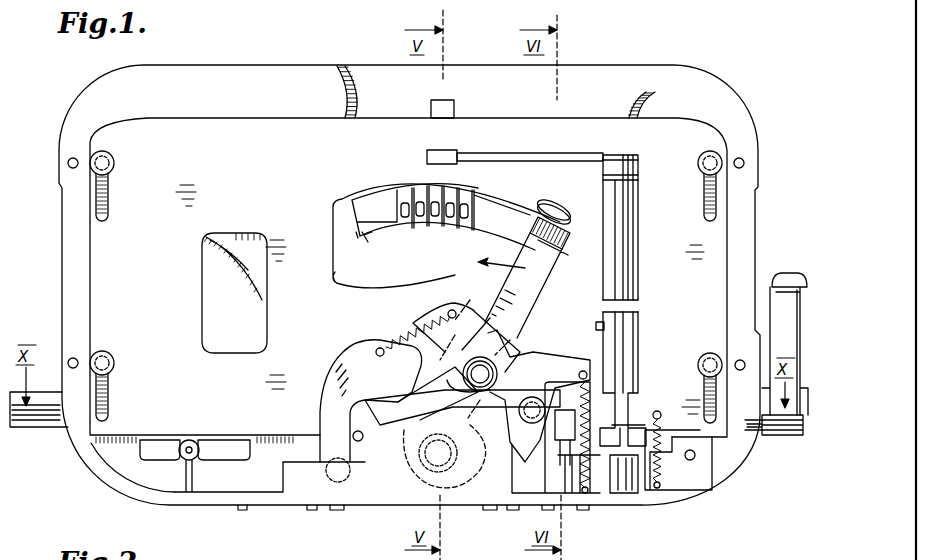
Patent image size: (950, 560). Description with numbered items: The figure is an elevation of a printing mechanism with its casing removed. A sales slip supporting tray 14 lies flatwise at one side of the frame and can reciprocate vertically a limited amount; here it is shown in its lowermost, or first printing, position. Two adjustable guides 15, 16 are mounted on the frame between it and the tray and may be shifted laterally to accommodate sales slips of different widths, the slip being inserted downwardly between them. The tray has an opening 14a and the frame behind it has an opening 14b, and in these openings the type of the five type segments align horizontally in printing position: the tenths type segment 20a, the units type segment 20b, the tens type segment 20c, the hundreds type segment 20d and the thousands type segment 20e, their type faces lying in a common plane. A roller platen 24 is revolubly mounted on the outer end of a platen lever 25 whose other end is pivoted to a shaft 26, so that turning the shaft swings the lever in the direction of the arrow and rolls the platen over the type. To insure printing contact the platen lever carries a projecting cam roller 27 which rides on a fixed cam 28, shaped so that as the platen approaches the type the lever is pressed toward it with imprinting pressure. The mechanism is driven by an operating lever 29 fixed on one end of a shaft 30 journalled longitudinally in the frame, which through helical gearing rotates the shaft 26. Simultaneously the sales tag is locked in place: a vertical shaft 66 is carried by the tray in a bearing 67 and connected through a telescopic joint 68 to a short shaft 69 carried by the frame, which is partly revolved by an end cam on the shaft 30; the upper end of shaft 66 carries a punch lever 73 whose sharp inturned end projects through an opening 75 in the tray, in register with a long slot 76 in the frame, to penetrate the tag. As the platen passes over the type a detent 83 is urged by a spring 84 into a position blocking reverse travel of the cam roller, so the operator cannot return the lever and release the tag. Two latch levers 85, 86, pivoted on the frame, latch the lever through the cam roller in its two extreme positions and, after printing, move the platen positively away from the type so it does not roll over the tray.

The sales slip supporting tray 14 is at (238, 167).
The opening in the tray 14a is at (335, 270).
The opening in the frame 14b is at (378, 244).
The adjustable guide 15 is at (336, 81).
The adjustable guide 16 is at (650, 100).
The tenths type segment 20a is at (377, 196).
The units type segment 20b is at (419, 254).
The tens type segment 20c is at (464, 253).
The hundreds type segment 20d is at (500, 180).
The thousands type segment 20e is at (510, 230).
The roller platen 24 is at (574, 252).
The platen lever 25 is at (528, 310).
The shaft 26 is at (440, 460).
The cam roller 27 is at (496, 370).
The fixed cam 28 is at (412, 384).
The operating lever 29 is at (792, 276).
The shaft 30 is at (758, 432).
The vertical shaft 66 is at (630, 237).
The bearing 67 is at (650, 305).
The telescopic joint 68 is at (640, 350).
The short shaft 69 is at (636, 405).
The punch lever 73 is at (515, 153).
The opening in the tray 75 is at (452, 152).
The long slot 76 is at (454, 101).
The detent 83 is at (458, 398).
The spring 84 is at (595, 480).
The latch lever 85 is at (360, 364).
The latch lever 86 is at (468, 318).